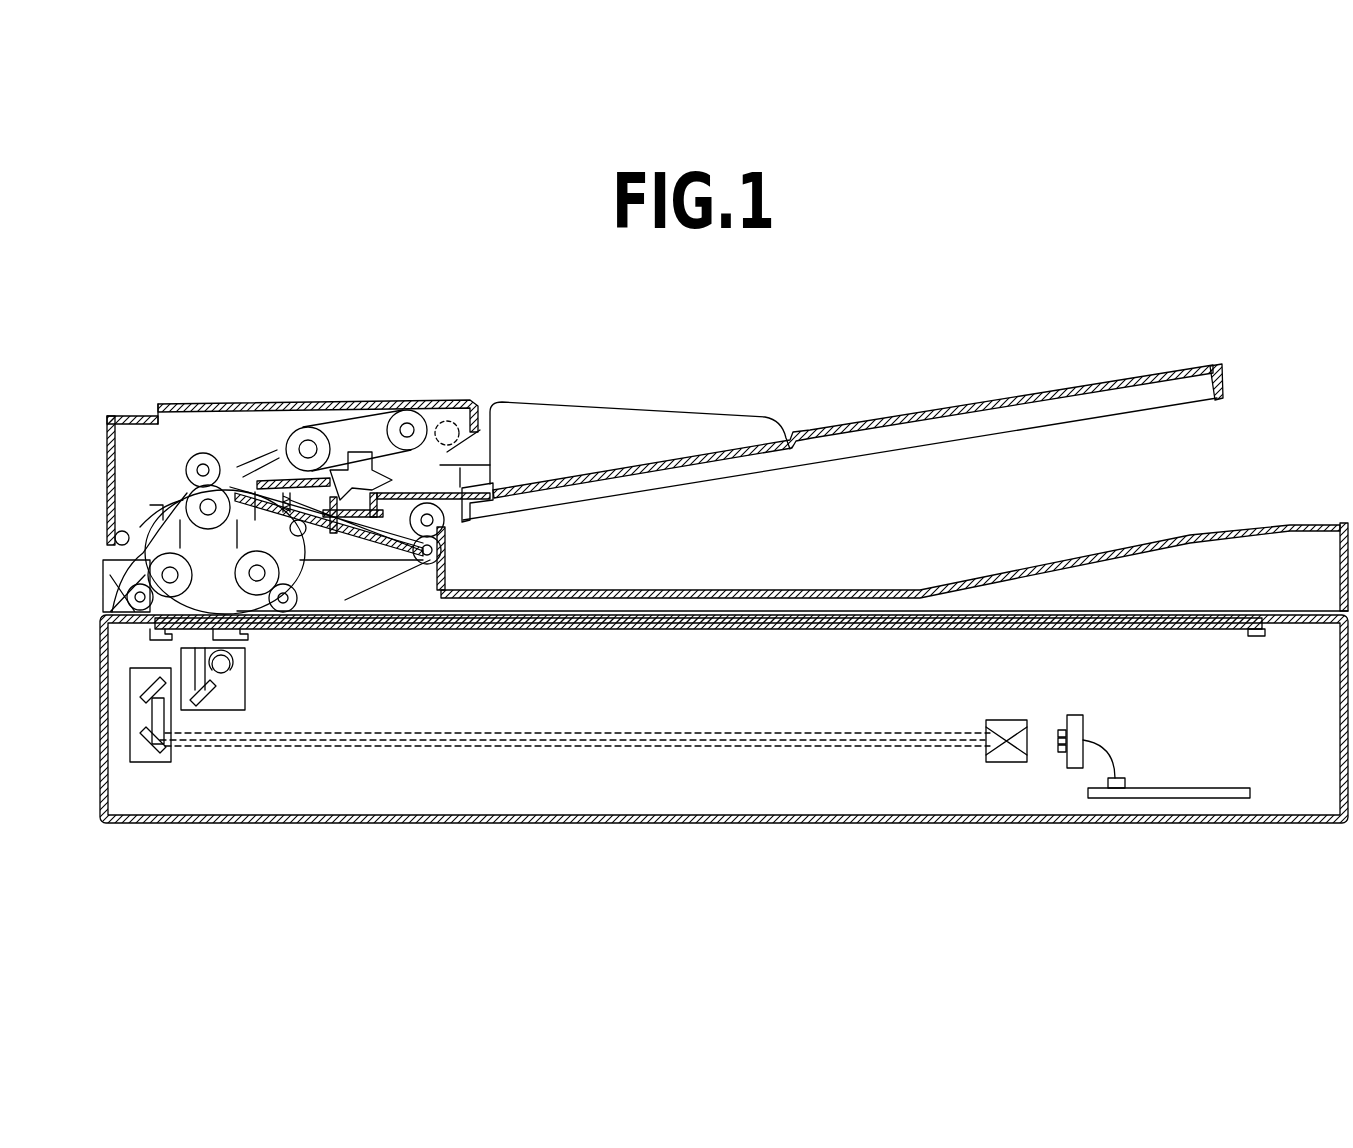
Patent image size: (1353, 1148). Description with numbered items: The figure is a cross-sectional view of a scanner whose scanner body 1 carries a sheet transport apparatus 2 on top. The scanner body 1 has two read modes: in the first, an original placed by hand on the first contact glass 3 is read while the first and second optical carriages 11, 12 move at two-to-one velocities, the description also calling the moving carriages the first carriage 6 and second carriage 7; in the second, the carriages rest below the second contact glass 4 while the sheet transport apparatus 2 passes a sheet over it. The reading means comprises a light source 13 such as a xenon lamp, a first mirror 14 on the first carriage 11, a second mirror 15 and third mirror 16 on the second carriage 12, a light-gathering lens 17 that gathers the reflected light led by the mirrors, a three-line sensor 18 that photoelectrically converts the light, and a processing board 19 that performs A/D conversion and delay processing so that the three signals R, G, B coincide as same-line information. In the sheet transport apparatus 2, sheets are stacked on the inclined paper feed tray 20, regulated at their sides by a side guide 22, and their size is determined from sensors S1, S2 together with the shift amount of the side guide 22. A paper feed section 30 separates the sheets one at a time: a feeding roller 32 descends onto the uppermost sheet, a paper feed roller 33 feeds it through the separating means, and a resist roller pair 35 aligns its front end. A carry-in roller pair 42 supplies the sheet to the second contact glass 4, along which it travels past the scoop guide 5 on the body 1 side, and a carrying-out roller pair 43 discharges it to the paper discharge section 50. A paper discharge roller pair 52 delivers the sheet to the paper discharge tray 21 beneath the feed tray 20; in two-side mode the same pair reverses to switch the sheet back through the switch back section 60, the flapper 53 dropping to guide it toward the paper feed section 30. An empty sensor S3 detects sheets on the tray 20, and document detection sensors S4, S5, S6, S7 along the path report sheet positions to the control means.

The scanner body 1 is at (95, 734).
The sheet transport apparatus 2 is at (823, 343).
The first contact glass 3 is at (488, 630).
The second contact glass 4 is at (168, 634).
The scoop guide 5 is at (236, 633).
The first carriage 6 is at (258, 712).
The second carriage 7 is at (142, 770).
The first optical carriage 11 is at (248, 702).
The second optical carriage 12 is at (152, 765).
The light source 13 is at (235, 668).
The first mirror 14 is at (210, 702).
The second mirror 15 is at (145, 690).
The third mirror 16 is at (135, 760).
The light-gathering lens 17 is at (990, 720).
The three-line sensor 18 is at (1080, 715).
The processing board 19 is at (1195, 788).
The paper feed tray 20 is at (925, 406).
The paper discharge tray 21 is at (885, 592).
The side guide 22 is at (583, 415).
The paper feed section 30 is at (248, 438).
The feeding roller 32 is at (410, 412).
The paper feed roller 33 is at (308, 428).
The resist roller pair 35 is at (186, 466).
The carry-in roller pair 42 is at (125, 600).
The carrying-out roller pair 43 is at (300, 615).
The paper discharge section 50 is at (368, 563).
The paper discharge roller pair 52 is at (440, 538).
The flapper 53 is at (323, 540).
The switch back section 60 is at (242, 538).
The sensor S1 is at (810, 442).
The sensor S2 is at (1162, 384).
The empty sensor S3 is at (388, 448).
The original document detection sensor S4 is at (281, 460).
The original document detection sensor S5 is at (232, 466).
The original document detection sensor S6 is at (152, 556).
The original document detection sensor S7 is at (394, 552).
The B signal B is at (1060, 732).
The G signal G is at (1057, 745).
The R signal R is at (1068, 752).